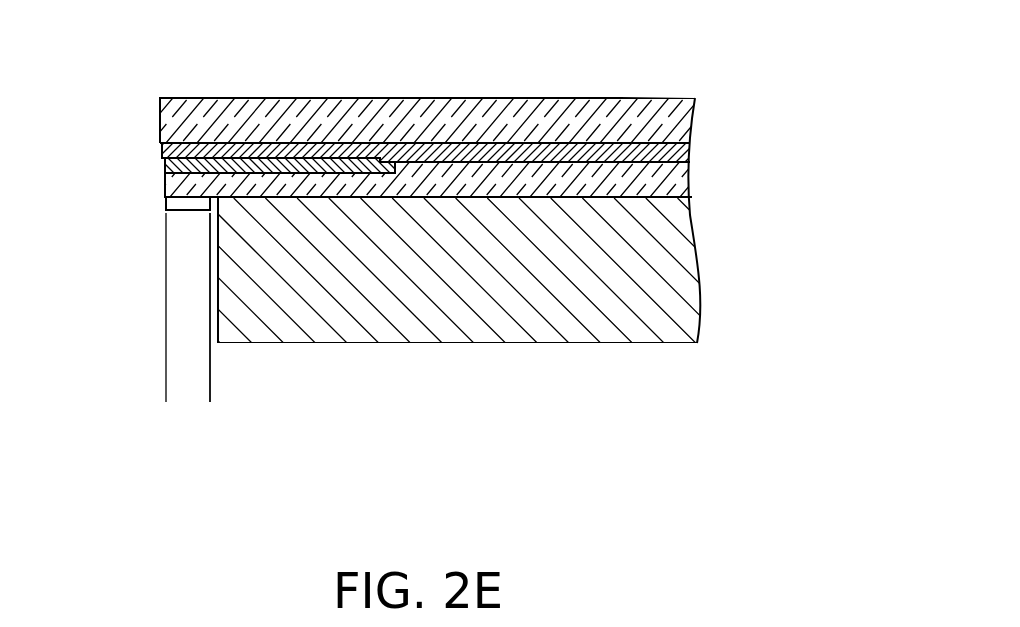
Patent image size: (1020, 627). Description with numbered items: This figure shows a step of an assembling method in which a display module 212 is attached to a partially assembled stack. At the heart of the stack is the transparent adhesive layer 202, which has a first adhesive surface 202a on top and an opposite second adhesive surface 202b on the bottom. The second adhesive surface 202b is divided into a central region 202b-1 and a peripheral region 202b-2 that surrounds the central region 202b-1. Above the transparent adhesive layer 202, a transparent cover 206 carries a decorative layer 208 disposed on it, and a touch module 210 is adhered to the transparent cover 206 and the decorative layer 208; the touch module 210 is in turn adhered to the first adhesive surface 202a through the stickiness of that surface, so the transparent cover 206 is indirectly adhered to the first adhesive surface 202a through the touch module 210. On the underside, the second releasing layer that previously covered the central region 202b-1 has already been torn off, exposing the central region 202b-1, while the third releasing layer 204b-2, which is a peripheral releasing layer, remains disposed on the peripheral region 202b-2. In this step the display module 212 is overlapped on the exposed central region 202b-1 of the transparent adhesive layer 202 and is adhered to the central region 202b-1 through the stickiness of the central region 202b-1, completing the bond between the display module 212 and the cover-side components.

The transparent adhesive layer 202 is at (673, 176).
The first adhesive surface 202a is at (650, 159).
The second adhesive surface 202b is at (646, 199).
The central region 202b-1 is at (210, 402).
The peripheral region 202b-2 is at (210, 402).
The third releasing layer 204b-2 is at (195, 204).
The transparent cover 206 is at (672, 120).
The decorative layer 208 is at (268, 157).
The touch module 210 is at (457, 155).
The display module 212 is at (672, 275).